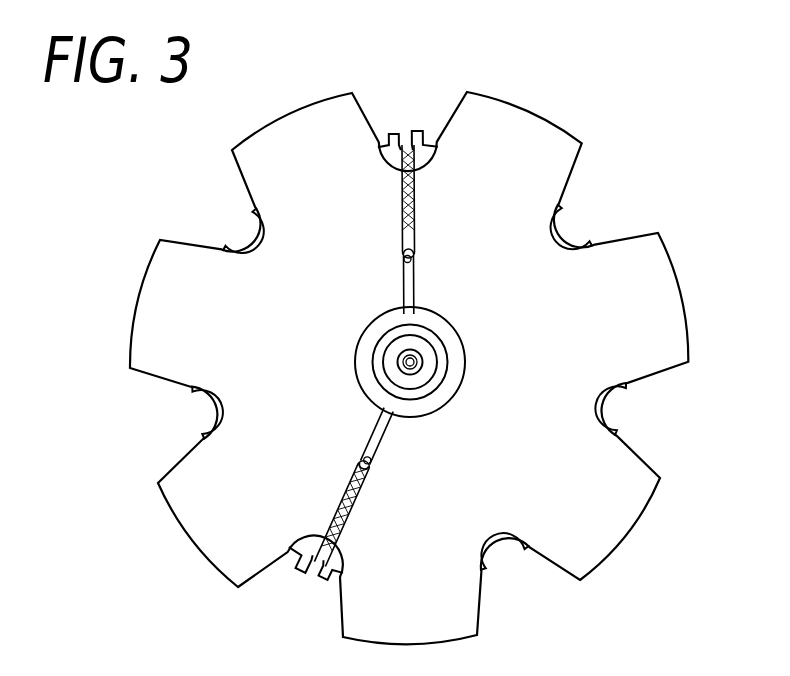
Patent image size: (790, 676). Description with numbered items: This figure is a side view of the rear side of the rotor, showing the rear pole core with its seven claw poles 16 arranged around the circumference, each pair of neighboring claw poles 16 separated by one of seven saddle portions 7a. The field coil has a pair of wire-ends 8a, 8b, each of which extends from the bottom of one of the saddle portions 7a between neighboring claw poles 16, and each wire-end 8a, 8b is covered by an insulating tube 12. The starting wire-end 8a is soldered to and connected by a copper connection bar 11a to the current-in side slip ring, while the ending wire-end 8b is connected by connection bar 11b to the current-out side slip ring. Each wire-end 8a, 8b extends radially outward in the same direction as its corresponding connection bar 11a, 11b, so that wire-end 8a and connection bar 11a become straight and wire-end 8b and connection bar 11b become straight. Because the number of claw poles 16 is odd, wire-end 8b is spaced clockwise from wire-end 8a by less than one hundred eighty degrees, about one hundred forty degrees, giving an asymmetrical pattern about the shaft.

The claw poles 16 is at (525, 137).
The saddle portions 7a is at (425, 110).
The insulating tubes 12 is at (415, 212).
The starting wire-end 8a is at (404, 259).
The ending wire-end 8b is at (371, 463).
The connection bar 11a is at (414, 287).
The connection bar 11b is at (374, 451).